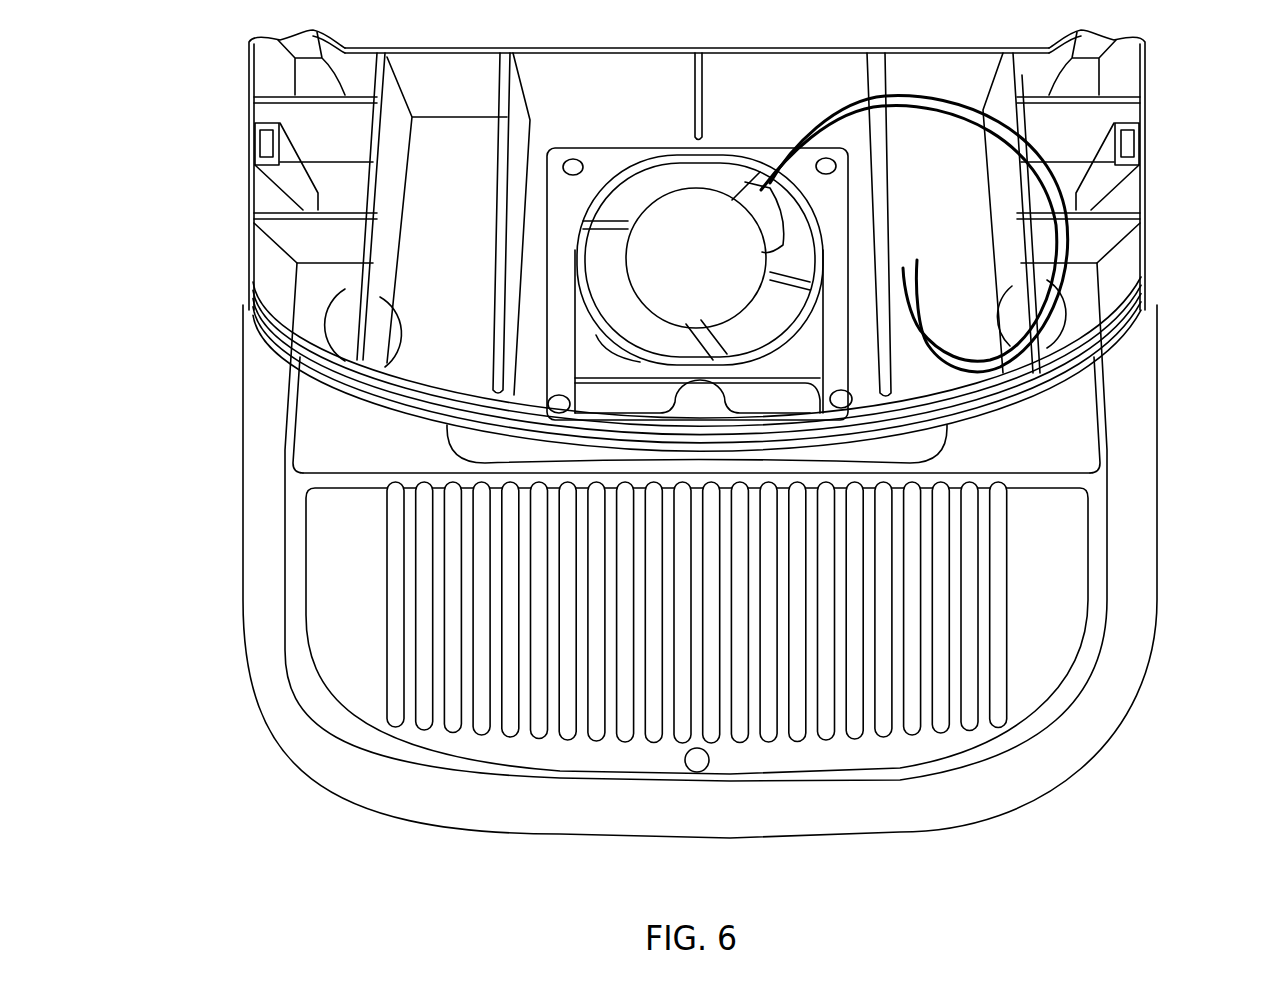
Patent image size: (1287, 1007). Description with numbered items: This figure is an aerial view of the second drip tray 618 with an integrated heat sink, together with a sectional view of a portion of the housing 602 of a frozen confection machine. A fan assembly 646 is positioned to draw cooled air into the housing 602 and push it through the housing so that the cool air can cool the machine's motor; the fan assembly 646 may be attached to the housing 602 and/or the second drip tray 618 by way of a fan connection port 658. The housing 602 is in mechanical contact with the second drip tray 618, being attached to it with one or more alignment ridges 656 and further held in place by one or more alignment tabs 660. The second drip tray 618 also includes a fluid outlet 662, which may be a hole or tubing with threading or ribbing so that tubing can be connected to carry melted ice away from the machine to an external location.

The housing 602 is at (236, 68).
The second drip tray 618 is at (285, 704).
The fan assembly 646 is at (690, 268).
The alignment ridges 656 is at (578, 388).
The fan connection port 658 is at (575, 347).
The alignment tabs 660 is at (1035, 397).
The fluid outlet 662 is at (693, 753).